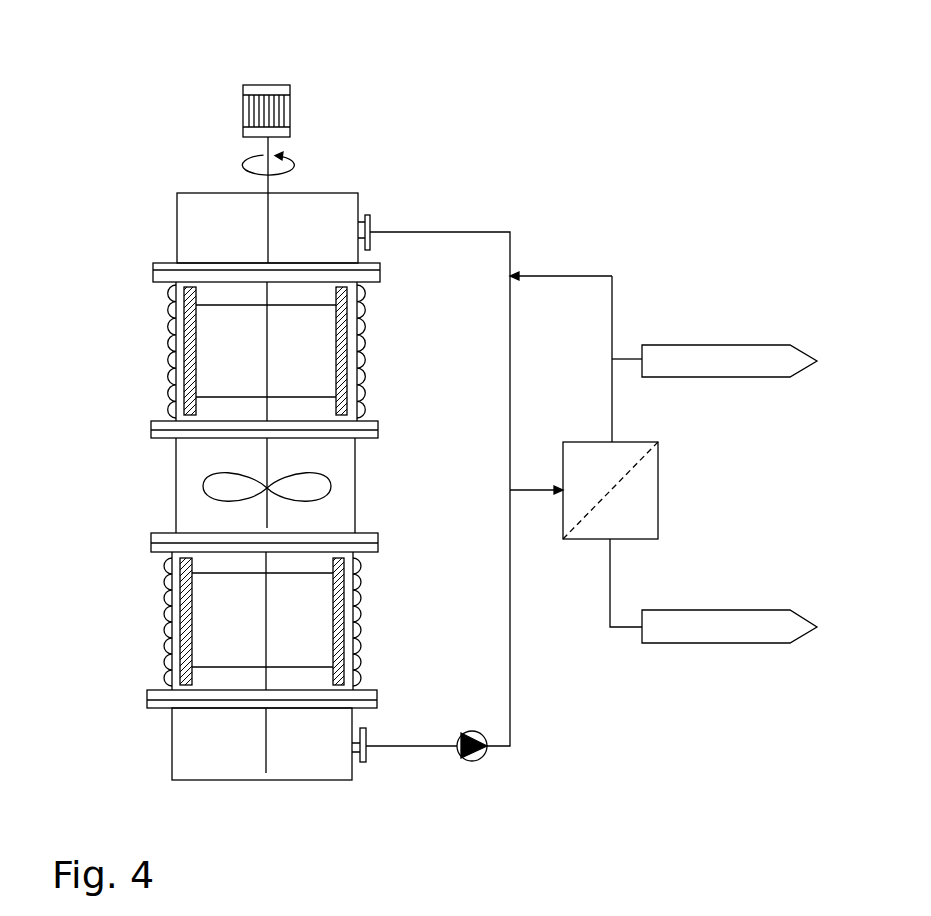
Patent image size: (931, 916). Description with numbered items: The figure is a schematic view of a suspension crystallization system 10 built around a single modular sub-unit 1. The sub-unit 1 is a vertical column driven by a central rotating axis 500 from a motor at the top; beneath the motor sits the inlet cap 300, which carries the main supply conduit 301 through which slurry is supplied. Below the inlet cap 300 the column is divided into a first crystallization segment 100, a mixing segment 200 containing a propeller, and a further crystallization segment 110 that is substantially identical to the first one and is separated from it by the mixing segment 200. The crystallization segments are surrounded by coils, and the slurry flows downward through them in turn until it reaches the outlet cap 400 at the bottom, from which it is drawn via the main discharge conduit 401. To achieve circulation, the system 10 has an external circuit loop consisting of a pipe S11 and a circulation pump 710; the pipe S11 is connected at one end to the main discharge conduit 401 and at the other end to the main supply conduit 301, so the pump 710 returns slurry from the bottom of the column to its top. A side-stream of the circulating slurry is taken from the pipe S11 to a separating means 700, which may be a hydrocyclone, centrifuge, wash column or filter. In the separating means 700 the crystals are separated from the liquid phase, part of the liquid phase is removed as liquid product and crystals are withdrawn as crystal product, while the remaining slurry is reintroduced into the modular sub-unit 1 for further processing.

The suspension crystallization system 10 is at (436, 390).
The modular sub-unit 1 is at (367, 126).
The central rotating axis 500 is at (268, 192).
The inlet cap 300 is at (208, 233).
The main supply conduit 301 is at (372, 240).
The crystallization segment 100 is at (207, 408).
The mixing segment 200 is at (207, 520).
The further crystallization segment 110 is at (205, 678).
The outlet cap 400 is at (203, 772).
The main discharge conduit 401 is at (367, 752).
The circulation pump 710 is at (488, 750).
The pipe S11 is at (510, 665).
The separating means 700 is at (626, 525).